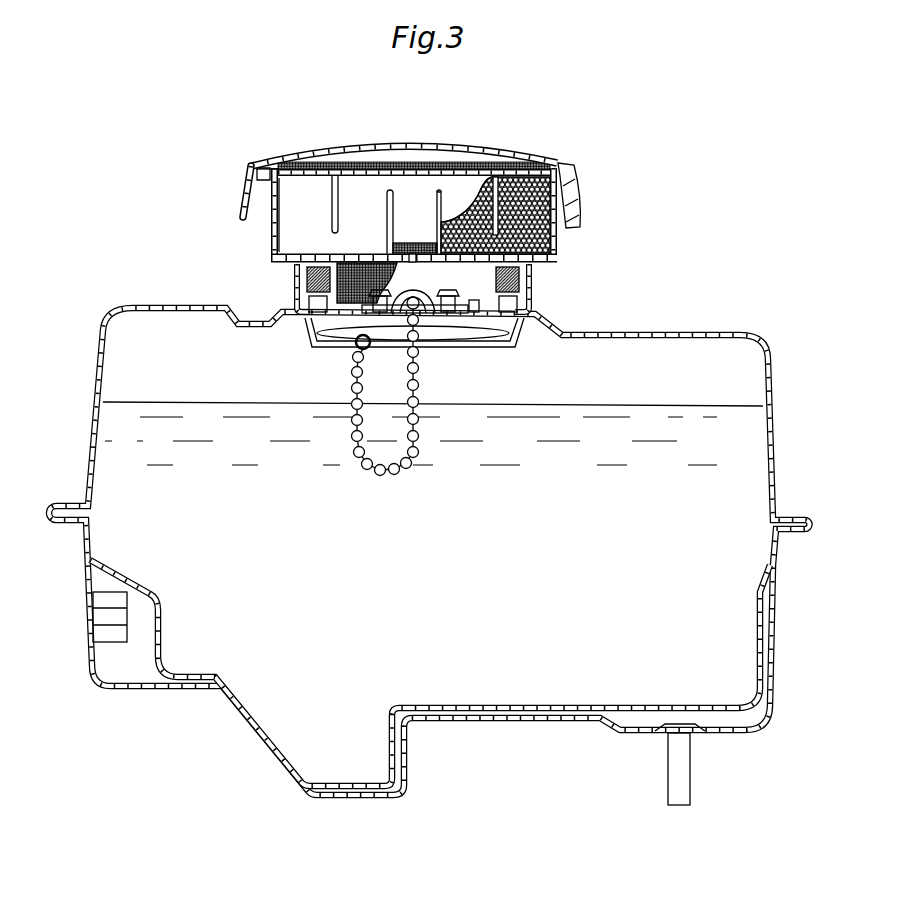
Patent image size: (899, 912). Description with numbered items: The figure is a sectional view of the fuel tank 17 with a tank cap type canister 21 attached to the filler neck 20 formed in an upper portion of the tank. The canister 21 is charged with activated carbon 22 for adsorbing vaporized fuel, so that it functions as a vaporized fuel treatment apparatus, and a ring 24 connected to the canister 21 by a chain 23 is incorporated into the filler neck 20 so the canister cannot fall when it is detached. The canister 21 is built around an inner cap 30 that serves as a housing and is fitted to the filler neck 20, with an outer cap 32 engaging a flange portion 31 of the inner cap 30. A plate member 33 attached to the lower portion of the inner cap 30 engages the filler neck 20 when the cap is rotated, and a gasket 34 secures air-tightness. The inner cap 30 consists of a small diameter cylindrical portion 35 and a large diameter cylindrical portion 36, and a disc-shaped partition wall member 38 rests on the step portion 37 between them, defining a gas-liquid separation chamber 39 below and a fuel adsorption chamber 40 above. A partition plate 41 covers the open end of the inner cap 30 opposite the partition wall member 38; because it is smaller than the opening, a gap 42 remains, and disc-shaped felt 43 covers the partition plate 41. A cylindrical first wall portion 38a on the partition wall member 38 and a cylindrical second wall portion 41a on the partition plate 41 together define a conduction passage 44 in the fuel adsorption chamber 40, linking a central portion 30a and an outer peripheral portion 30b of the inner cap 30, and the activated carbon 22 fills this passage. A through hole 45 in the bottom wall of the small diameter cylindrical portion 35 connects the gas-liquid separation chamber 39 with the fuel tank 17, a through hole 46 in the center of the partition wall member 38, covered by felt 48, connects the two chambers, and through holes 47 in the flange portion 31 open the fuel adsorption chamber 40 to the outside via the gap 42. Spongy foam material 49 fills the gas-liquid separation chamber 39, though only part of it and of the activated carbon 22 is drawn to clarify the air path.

The fuel tank 17 is at (792, 368).
The filler neck 20 is at (468, 355).
The tank cap type canister 21 is at (592, 163).
The activated carbon 22 is at (551, 235).
The chain 23 is at (352, 377).
The ring 24 is at (387, 342).
The inner cap 30 is at (565, 266).
The central portion 30a is at (430, 190).
The outer peripheral portion 30b is at (287, 222).
The flange portion 31 is at (263, 165).
The outer cap 32 is at (452, 147).
The plate member 33 is at (427, 318).
The gasket 34 is at (520, 288).
The small diameter cylindrical portion 35 is at (307, 286).
The large diameter cylindrical portion 36 is at (271, 243).
The step portion 37 is at (284, 267).
The partition wall member 38 is at (363, 253).
The first wall portion 38a is at (386, 193).
The gas-liquid separation chamber 39 is at (458, 285).
The fuel adsorption chamber 40 is at (420, 203).
The partition plate 41 is at (350, 168).
The second wall portion 41a is at (330, 198).
The gap 42 is at (294, 164).
The felt 43 is at (397, 168).
The conduction passage 44 is at (462, 182).
The through hole 45 is at (474, 300).
The through hole 46 is at (412, 262).
The through holes 47 is at (243, 203).
The felt 48 is at (425, 244).
The foam material 49 is at (348, 260).